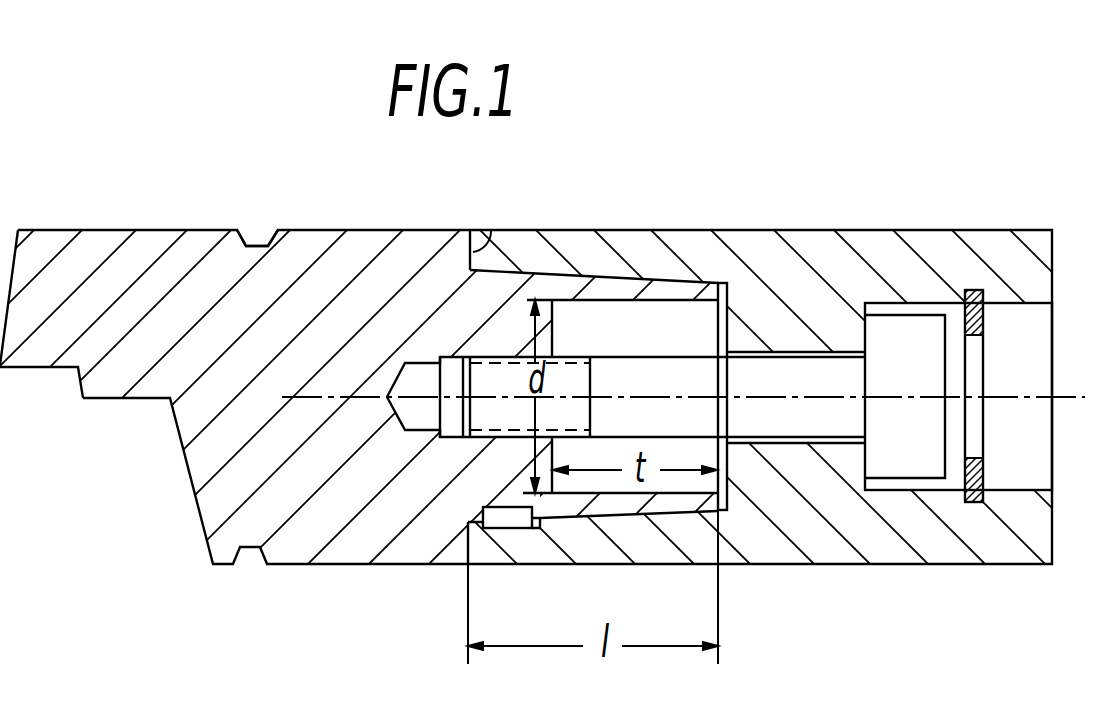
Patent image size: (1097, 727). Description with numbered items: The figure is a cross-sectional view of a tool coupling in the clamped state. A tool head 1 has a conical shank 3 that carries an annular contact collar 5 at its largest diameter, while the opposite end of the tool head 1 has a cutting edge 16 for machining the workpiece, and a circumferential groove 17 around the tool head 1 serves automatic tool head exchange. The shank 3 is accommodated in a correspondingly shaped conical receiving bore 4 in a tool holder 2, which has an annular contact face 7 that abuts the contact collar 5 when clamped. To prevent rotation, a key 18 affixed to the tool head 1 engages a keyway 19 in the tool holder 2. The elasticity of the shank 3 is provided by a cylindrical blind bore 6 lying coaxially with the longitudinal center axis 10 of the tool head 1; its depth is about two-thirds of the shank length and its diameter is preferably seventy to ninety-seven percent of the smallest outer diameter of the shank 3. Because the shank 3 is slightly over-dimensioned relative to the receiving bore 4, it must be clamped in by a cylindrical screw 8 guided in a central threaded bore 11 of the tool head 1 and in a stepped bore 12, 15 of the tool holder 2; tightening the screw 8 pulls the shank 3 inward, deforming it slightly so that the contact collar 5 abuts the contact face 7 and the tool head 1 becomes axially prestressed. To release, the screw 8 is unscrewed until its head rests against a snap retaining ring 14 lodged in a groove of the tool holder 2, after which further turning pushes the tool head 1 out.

The tool head 1 is at (360, 550).
The tool holder 2 is at (962, 553).
The conical shank 3 is at (574, 513).
The conical receiving bore 4 is at (618, 270).
The annular contact collar 5 is at (468, 540).
The blind bore 6 is at (687, 318).
The annular contact face 7 is at (493, 232).
The cylindrical screw 8 is at (793, 394).
The longitudinal center axis 10 is at (1015, 400).
The central threaded bore 11 is at (513, 357).
The stepped bore 12 is at (793, 445).
The snap retaining ring 14 is at (982, 500).
The stepped bore 15 is at (928, 490).
The cutting edge 16 is at (32, 388).
The circumferential groove 17 is at (259, 232).
The key 18 is at (497, 510).
The keyway 19 is at (480, 530).